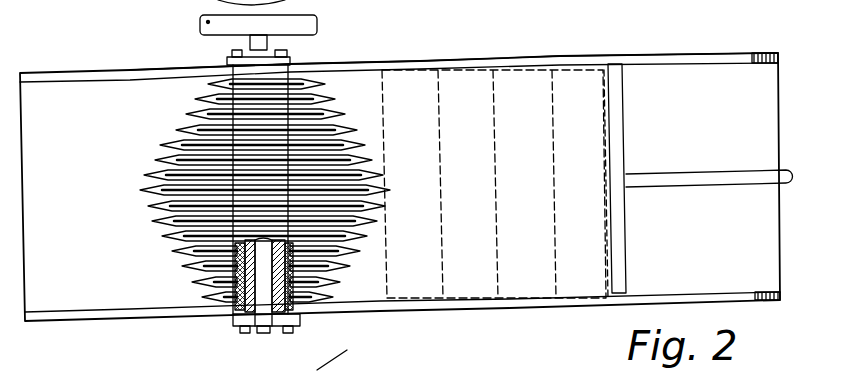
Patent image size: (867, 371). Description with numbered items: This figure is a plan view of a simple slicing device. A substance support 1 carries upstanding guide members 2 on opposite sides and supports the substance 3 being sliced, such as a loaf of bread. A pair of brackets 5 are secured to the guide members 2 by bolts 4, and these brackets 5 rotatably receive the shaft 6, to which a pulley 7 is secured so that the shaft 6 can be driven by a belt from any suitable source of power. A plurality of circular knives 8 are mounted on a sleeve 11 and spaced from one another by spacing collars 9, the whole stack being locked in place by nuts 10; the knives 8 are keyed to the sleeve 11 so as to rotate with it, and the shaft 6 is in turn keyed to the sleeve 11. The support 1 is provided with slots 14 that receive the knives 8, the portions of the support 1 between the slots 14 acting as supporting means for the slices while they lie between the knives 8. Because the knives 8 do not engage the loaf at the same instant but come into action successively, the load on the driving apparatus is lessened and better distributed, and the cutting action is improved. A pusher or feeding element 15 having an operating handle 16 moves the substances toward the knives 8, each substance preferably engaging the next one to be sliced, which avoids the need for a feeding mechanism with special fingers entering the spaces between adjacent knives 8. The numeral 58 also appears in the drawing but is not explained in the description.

The casing 1 is at (765, 88).
The casing top wall 2 is at (710, 56).
The bellows bag 3 is at (575, 84).
The clamping plate 4 is at (228, 59).
The end plate 5 is at (274, 80).
The nut 6 is at (250, 43).
The handle 7 is at (207, 21).
The blades 8 is at (185, 133).
The blade carrier column 9 is at (274, 97).
The bushing 10 is at (238, 307).
The sleeve bearing 11 is at (255, 311).
The lower blades 14 is at (135, 192).
The piston 15 is at (615, 147).
The piston rod 16 is at (697, 176).
The base 58 is at (346, 358).